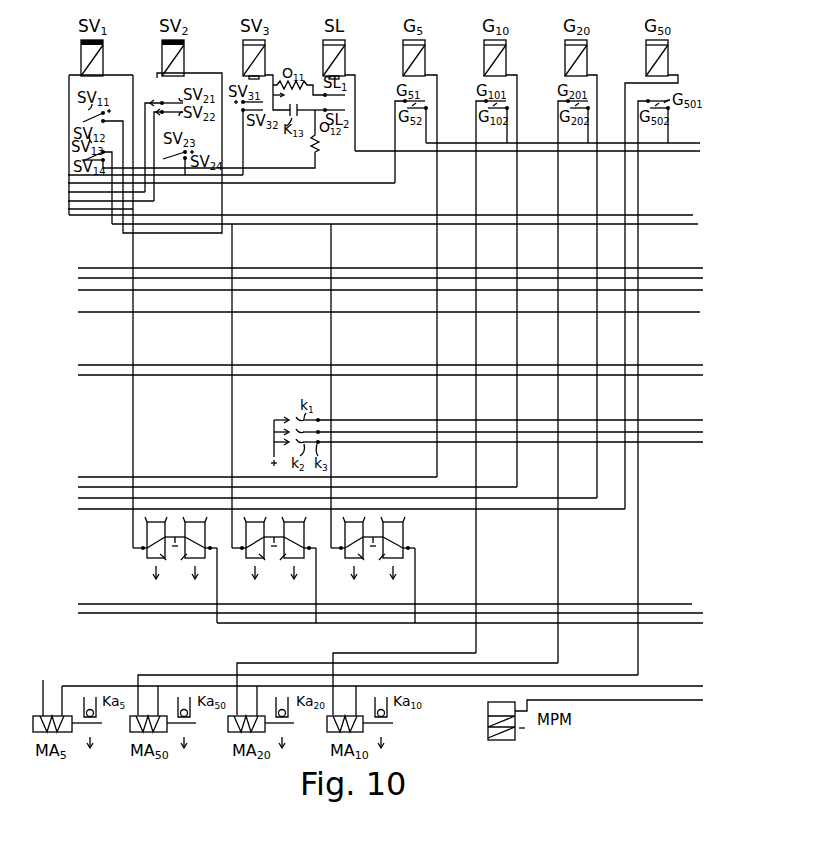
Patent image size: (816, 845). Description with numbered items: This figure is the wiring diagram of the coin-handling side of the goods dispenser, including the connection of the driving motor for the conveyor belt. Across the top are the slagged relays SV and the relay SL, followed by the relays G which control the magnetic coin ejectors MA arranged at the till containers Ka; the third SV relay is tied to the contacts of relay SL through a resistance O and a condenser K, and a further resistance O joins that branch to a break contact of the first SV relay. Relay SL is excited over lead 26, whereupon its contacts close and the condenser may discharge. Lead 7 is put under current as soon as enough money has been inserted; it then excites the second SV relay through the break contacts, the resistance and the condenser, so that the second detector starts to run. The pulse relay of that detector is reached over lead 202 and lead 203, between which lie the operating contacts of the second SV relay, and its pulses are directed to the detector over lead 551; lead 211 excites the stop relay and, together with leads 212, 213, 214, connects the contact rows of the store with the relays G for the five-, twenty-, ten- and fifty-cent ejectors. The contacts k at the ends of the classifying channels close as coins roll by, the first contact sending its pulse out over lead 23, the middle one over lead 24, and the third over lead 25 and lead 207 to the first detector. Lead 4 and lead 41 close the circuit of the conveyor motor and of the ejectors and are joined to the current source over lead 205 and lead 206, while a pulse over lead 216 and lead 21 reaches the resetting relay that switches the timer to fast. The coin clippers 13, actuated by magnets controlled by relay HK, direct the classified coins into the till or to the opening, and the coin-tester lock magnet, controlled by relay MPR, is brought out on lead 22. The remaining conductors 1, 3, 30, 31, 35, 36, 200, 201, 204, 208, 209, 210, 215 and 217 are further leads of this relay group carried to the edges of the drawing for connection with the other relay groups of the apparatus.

The line 1 is at (705, 370).
The line 3 is at (705, 359).
The lead 4 is at (700, 268).
The lead 7 is at (698, 224).
The money clippers 13 is at (274, 570).
The lead 21 is at (700, 613).
The line 22 is at (700, 700).
The lead 23 is at (700, 420).
The line 24 is at (705, 426).
The lead 25 is at (705, 438).
The lead 26 is at (690, 151).
The line 30 is at (693, 215).
The line 31 is at (705, 619).
The line 35 is at (705, 682).
The line 36 is at (690, 143).
The lead 41 is at (700, 278).
The line 200 is at (68, 175).
The line 201 is at (68, 183).
The lead 202 is at (68, 192).
The lead 203 is at (68, 201).
The line 204 is at (68, 209).
The lead 205 is at (381, 265).
The lead 206 is at (386, 277).
The lead 207 is at (78, 290).
The line 208 is at (78, 312).
The line 209 is at (382, 363).
The line 210 is at (382, 375).
The lead 211 is at (78, 477).
The lead 212 is at (78, 487).
The lead 213 is at (78, 498).
The lead 214 is at (78, 509).
The line 215 is at (78, 604).
The lead 216 is at (386, 612).
The line 217 is at (47, 689).
The lead 551 is at (135, 416).